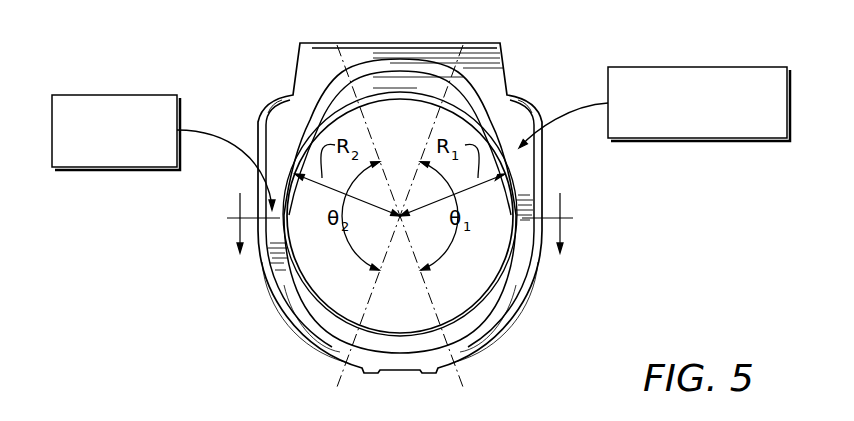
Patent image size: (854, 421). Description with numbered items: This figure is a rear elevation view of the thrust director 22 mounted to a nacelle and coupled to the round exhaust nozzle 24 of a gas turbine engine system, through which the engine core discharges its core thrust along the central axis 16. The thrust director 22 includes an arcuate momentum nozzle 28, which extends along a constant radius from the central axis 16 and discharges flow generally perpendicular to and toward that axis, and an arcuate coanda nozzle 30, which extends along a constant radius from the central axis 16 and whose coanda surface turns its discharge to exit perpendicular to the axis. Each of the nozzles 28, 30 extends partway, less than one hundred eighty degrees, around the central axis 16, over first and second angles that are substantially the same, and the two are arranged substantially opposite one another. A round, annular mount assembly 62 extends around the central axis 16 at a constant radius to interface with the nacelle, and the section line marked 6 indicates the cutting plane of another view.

The section line 6- 6 is at (400, 239).
The central axis 16 is at (400, 218).
The thrust director 22 is at (394, 72).
The round exhaust nozzle 24 is at (506, 88).
The arcuate momentum nozzle 28 is at (745, 67).
The arcuate coanda nozzle 30 is at (98, 95).
The mount assembly 62 is at (465, 72).